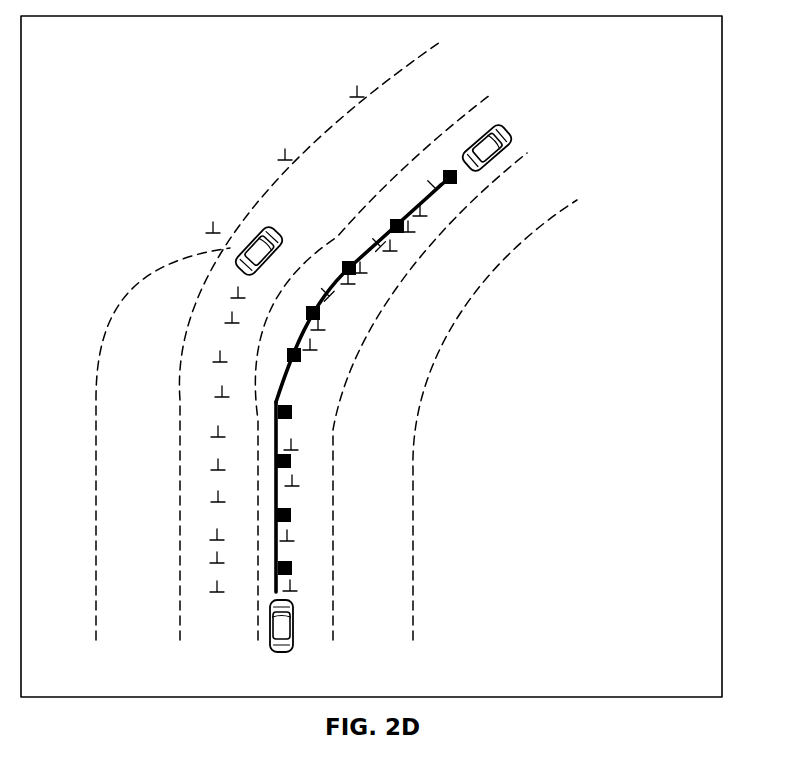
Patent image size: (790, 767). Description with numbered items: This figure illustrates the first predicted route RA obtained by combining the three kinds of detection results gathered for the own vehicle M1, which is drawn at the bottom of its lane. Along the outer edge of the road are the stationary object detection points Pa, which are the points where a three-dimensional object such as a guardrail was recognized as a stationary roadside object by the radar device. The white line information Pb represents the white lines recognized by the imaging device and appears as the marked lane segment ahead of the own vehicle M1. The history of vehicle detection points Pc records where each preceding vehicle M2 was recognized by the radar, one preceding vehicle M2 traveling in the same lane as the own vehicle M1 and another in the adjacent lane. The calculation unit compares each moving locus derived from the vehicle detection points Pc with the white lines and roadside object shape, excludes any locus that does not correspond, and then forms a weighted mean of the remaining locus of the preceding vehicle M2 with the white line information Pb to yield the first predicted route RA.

The stationary object detection point Pa is at (287, 152).
The white line information Pb is at (276, 442).
The vehicle detection point Pc is at (386, 247).
The first predicted route RA is at (303, 330).
The own vehicle M1 is at (273, 638).
The preceding vehicle M2 is at (277, 228).